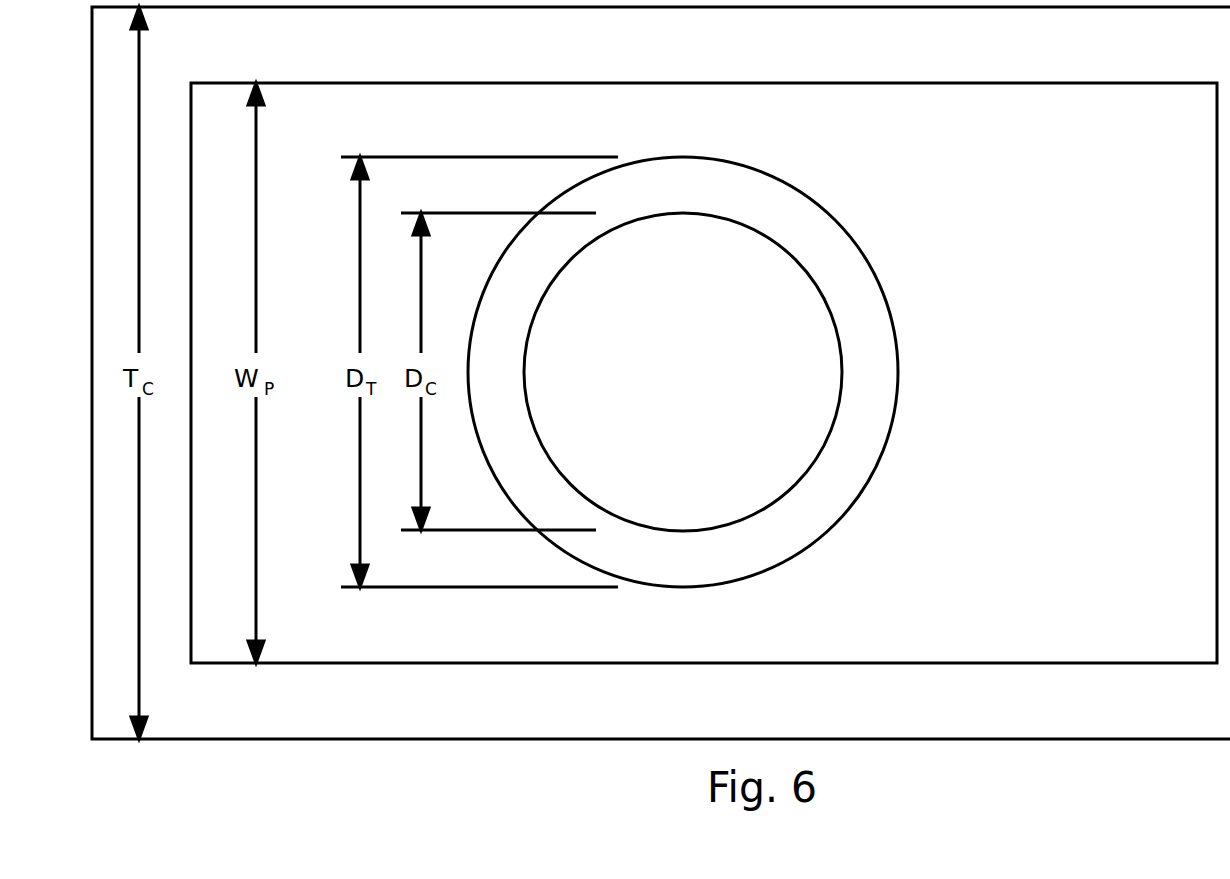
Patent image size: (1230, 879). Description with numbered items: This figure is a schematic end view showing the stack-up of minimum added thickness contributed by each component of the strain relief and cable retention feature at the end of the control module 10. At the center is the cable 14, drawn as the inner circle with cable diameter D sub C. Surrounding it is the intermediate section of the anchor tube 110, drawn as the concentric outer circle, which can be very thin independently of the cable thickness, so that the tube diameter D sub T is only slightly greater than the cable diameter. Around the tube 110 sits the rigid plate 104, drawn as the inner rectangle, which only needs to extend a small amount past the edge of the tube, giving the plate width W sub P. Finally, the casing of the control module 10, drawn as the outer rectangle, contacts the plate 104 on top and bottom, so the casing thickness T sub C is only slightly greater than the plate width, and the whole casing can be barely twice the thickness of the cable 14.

The control module 10 is at (978, 60).
The plate 104 is at (994, 208).
The tapered bore / seat 110 is at (738, 203).
The cable 14 is at (708, 270).